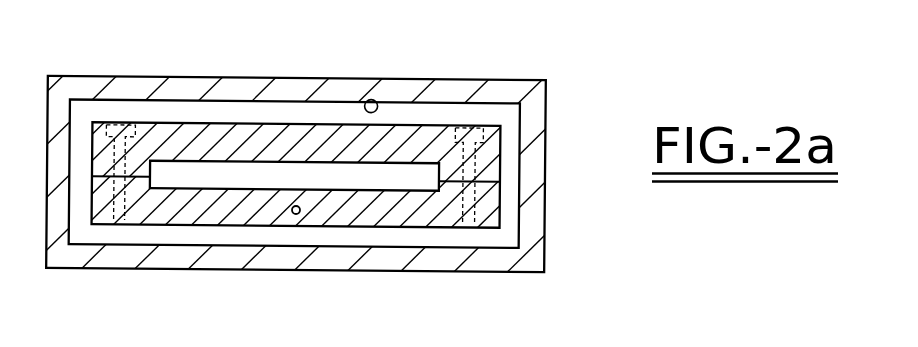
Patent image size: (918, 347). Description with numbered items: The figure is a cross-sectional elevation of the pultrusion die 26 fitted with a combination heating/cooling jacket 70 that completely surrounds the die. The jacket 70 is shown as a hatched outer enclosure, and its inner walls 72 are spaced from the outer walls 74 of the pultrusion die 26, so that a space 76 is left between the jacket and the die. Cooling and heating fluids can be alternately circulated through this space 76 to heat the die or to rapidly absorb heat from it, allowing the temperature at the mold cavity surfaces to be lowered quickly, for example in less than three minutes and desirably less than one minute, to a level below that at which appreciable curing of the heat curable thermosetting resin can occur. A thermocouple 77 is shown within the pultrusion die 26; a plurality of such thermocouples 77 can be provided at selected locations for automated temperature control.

The heating/cooling jacket 70 is at (556, 236).
The inner walls 72 is at (364, 99).
The outer walls 74 is at (246, 123).
The pultrusion die 26 is at (440, 118).
The space 76 is at (336, 250).
The thermocouples 77 is at (294, 216).